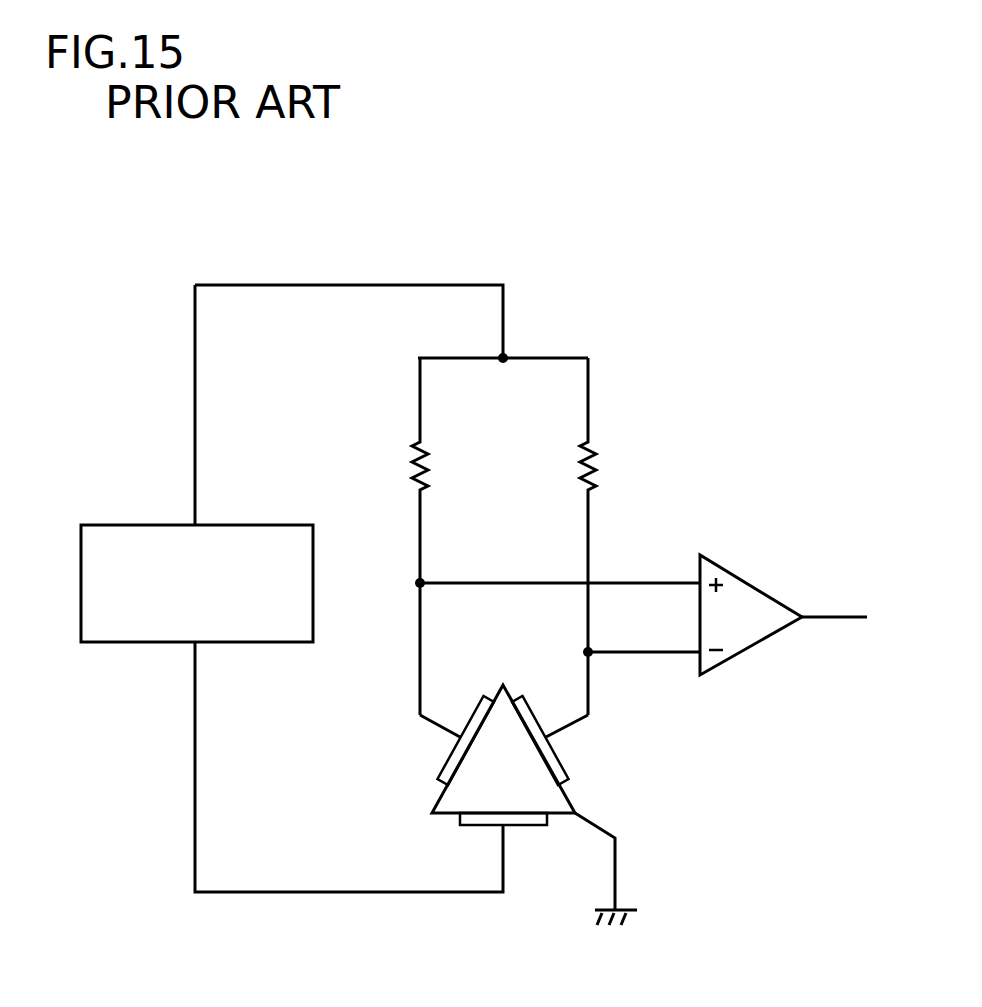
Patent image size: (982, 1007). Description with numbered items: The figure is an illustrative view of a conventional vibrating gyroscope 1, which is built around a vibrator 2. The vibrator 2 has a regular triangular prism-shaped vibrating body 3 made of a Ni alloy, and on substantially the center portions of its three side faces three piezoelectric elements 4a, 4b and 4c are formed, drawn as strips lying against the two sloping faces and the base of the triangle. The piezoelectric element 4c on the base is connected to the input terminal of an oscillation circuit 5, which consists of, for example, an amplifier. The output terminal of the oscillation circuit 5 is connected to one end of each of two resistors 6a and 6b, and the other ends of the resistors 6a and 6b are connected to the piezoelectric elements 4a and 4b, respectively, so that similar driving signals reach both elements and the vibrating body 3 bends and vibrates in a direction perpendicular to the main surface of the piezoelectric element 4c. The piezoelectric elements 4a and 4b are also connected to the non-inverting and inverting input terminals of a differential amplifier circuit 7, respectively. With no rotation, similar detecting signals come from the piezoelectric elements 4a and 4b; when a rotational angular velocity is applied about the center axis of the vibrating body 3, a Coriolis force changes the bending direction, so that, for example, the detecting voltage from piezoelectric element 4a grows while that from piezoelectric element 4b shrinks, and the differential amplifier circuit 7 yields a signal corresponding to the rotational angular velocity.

The vibrating gyroscope 1 is at (580, 231).
The vibrator 2 is at (515, 805).
The vibrating body 3 is at (458, 805).
The piezoelectric element 4a is at (448, 767).
The piezoelectric element 4b is at (557, 760).
The piezoelectric element 4c is at (528, 824).
The oscillation circuit 5 is at (102, 628).
The resistor 6a is at (410, 468).
The resistor 6b is at (597, 468).
The differential amplifier circuit 7 is at (747, 630).